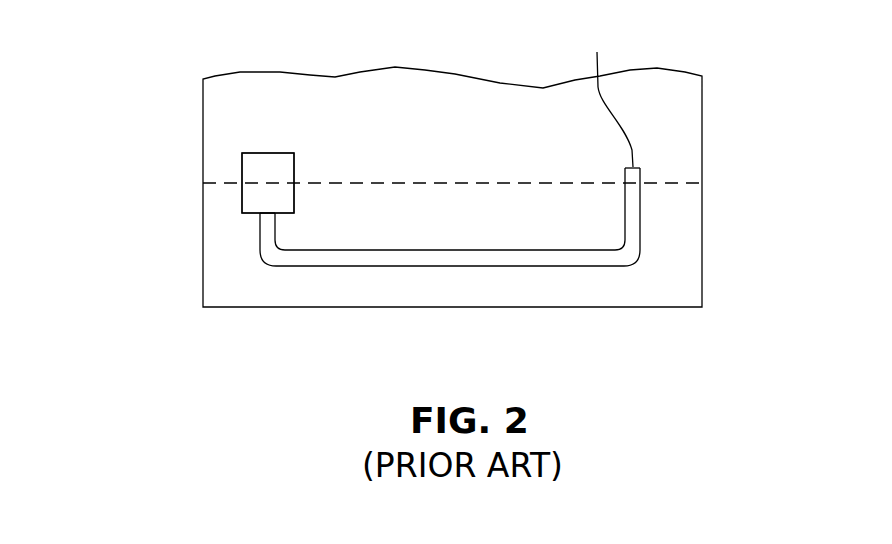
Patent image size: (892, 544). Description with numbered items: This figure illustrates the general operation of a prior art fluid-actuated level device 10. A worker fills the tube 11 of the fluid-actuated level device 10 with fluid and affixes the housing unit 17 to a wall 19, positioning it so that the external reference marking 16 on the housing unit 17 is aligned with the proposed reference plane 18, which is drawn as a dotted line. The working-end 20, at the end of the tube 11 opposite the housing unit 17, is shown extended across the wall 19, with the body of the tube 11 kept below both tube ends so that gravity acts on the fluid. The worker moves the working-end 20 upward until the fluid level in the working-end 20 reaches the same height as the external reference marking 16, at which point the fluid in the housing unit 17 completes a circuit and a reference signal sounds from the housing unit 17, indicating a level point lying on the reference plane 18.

The fluid-actuated level device 10 is at (305, 149).
The tube 11 is at (427, 250).
The external reference marking 16 is at (267, 183).
The housing unit 17 is at (295, 203).
The reference plane 18 is at (668, 182).
The wall 19 is at (687, 108).
The working-end 20 is at (608, 96).